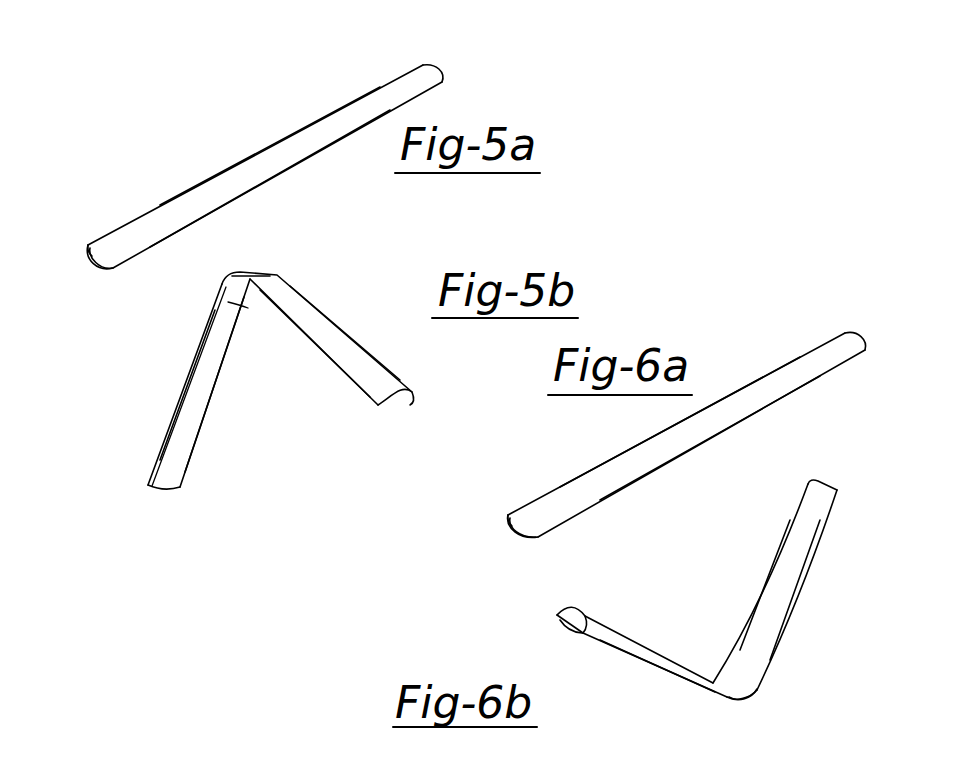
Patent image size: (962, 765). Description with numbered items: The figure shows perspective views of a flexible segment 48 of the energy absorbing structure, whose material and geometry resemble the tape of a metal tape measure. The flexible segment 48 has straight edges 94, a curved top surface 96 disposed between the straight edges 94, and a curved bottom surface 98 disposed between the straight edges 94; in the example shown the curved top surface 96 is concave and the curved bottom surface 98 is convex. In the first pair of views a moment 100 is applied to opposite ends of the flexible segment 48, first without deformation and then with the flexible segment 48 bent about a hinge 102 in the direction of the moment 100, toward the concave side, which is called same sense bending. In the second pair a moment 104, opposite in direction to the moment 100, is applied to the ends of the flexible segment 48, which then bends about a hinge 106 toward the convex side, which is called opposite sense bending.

In FIG. 5A, the flexible segment 48 is at (332, 60).
In FIG. 5B, the flexible segment 48 is at (327, 280).
In FIG. 6A, the flexible segment 48 is at (753, 335).
In FIG. 6B, the flexible segment 48 is at (880, 550).
In FIG. 5A, the straight edges 94 is at (97, 275).
In FIG. 5B, the straight edges 94 is at (341, 373).
In FIG. 6A, the straight edges 94 is at (515, 525).
In FIG. 6B, the straight edges 94 is at (790, 630).
In FIG. 5A, the curved top surface 96 is at (185, 232).
In FIG. 5B, the curved top surface 96 is at (195, 417).
In FIG. 6A, the curved top surface 96 is at (682, 472).
In FIG. 6B, the curved top surface 96 is at (647, 675).
In FIG. 5A, the curved bottom surface 98 is at (250, 175).
In FIG. 5B, the curved bottom surface 98 is at (332, 343).
In FIG. 6A, the curved bottom surface 98 is at (612, 468).
In FIG. 6B, the curved bottom surface 98 is at (773, 608).
In FIG. 5A, the moment 100 is at (441, 43).
In FIG. 5B, the moment 100 is at (410, 418).
In FIG. 5B, the hinge 102 is at (262, 272).
In FIG. 6A, the moment 104 is at (853, 310).
In FIG. 6B, the moment 104 is at (812, 466).
In FIG. 6B, the hinge 106 is at (748, 700).